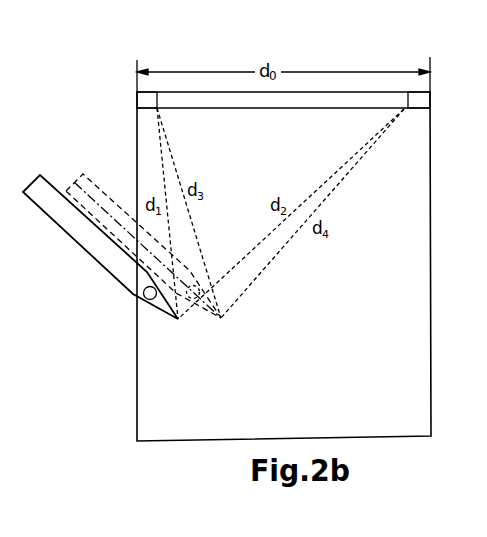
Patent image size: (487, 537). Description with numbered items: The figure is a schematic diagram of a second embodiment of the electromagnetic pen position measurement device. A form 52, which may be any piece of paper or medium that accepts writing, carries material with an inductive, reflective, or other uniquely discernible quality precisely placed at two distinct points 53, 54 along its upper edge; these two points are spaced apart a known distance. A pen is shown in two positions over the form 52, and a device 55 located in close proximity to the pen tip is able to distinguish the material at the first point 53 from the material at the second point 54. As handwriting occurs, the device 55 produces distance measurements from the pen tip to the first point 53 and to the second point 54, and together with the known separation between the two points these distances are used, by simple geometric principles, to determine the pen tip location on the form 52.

The form 52 is at (0, 349).
The first point of discernible material 53 is at (148, 102).
The second point of discernible material 54 is at (422, 98).
The device 55 is at (137, 298).